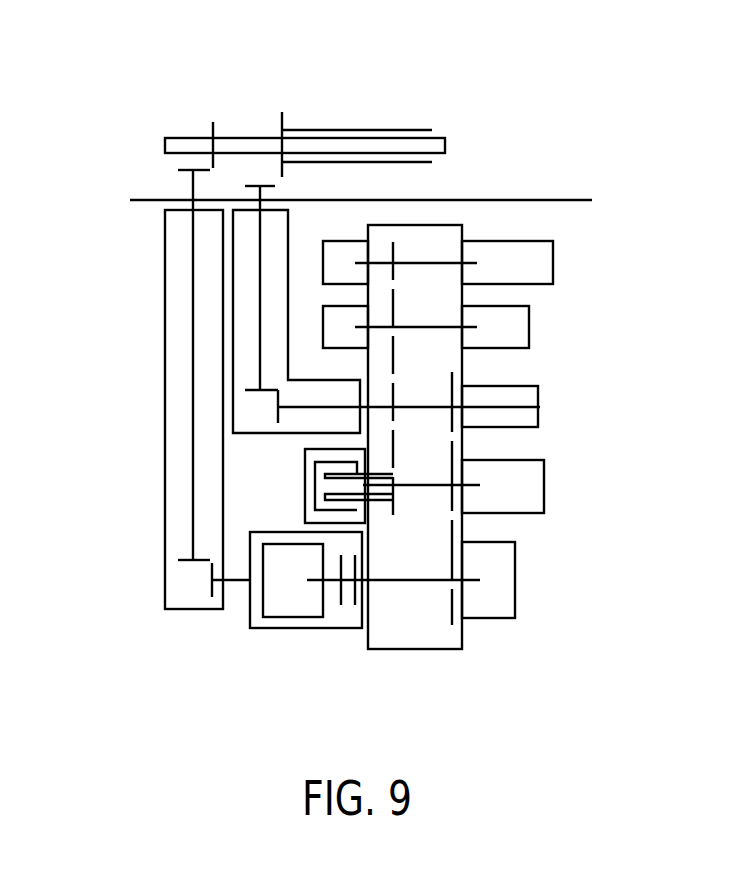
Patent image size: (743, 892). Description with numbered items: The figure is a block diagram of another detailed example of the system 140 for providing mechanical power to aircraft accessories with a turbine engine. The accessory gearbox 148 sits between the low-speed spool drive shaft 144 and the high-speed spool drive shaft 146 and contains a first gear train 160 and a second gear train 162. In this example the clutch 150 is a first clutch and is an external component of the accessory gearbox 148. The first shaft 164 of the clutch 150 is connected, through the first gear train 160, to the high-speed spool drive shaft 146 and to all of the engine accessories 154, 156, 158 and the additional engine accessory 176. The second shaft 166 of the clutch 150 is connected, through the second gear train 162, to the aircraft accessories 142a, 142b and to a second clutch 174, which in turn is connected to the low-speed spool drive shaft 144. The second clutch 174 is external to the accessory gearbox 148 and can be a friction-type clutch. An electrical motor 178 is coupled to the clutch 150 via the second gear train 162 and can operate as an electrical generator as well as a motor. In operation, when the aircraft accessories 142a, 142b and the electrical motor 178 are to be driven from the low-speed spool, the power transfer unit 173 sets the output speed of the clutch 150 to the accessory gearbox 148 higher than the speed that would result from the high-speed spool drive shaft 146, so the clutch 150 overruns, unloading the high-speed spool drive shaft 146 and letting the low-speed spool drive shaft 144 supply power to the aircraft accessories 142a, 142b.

The system 140 is at (168, 667).
The low-speed spool drive shaft 144 is at (175, 259).
The high-speed spool drive shaft 146 is at (242, 327).
The accessory gearbox 148 is at (418, 650).
The clutch 150 is at (295, 493).
The engine accessory 154 is at (557, 262).
The engine accessory 156 is at (343, 305).
The engine accessory 158 is at (355, 241).
The first gear train 160 is at (400, 242).
The second gear train 162 is at (442, 455).
The first shaft 164 is at (355, 478).
The second shaft 166 is at (423, 488).
The power transfer unit 173 is at (349, 610).
The second clutch 174 is at (282, 632).
The additional engine accessory 176 is at (530, 327).
The electrical motor 178 is at (545, 487).
The aircraft accessory 142a is at (496, 619).
The aircraft accessory 142b is at (540, 407).